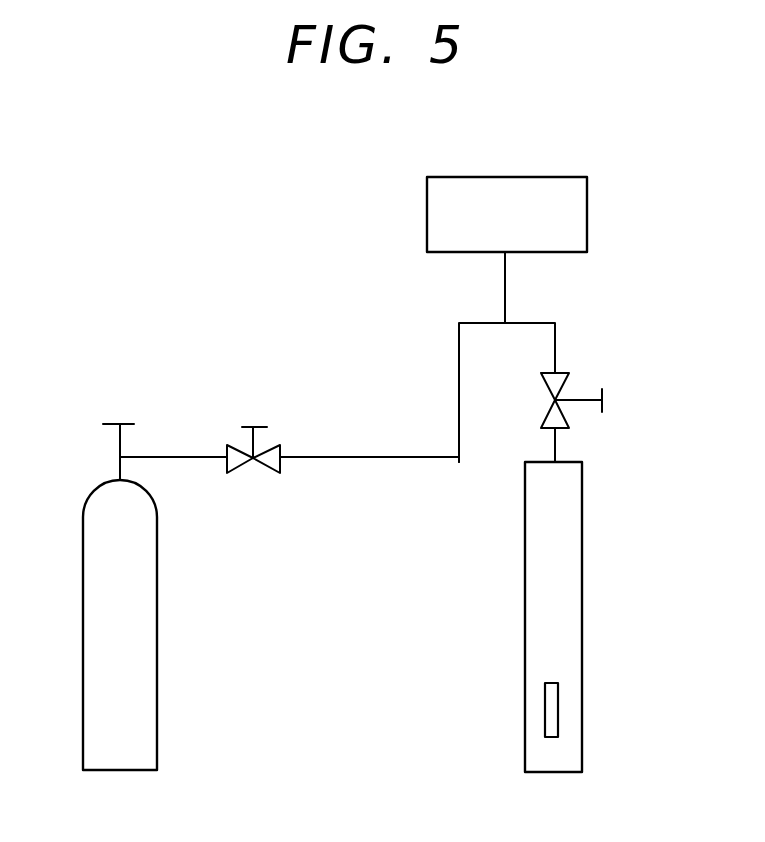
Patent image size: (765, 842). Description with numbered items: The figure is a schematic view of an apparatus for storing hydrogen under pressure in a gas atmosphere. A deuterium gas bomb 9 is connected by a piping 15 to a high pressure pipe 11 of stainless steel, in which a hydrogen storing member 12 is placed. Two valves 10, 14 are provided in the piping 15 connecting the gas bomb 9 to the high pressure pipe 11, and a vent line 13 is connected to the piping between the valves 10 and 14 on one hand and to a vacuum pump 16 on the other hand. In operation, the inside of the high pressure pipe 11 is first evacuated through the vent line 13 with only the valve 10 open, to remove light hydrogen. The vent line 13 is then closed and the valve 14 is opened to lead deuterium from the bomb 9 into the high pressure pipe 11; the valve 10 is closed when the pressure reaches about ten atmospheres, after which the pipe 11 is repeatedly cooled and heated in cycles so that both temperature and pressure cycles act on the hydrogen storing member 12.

The deuterium gas bomb 9 is at (143, 552).
The valve 10 is at (561, 372).
The high pressure pipe 11 is at (583, 510).
The hydrogen storing member 12 is at (552, 705).
The vent line 13 is at (506, 280).
The valve 14 is at (270, 445).
The pipe 15 is at (378, 457).
The vacuum pump 16 is at (548, 177).